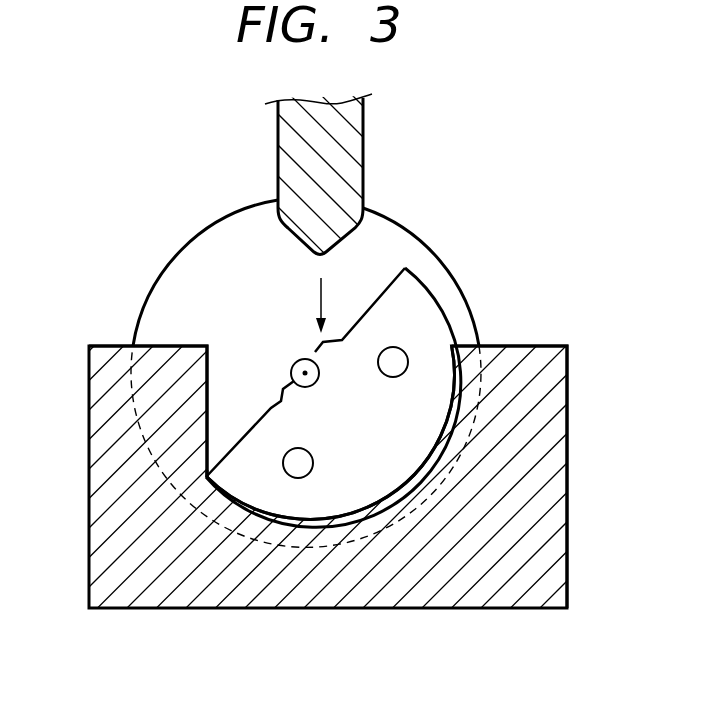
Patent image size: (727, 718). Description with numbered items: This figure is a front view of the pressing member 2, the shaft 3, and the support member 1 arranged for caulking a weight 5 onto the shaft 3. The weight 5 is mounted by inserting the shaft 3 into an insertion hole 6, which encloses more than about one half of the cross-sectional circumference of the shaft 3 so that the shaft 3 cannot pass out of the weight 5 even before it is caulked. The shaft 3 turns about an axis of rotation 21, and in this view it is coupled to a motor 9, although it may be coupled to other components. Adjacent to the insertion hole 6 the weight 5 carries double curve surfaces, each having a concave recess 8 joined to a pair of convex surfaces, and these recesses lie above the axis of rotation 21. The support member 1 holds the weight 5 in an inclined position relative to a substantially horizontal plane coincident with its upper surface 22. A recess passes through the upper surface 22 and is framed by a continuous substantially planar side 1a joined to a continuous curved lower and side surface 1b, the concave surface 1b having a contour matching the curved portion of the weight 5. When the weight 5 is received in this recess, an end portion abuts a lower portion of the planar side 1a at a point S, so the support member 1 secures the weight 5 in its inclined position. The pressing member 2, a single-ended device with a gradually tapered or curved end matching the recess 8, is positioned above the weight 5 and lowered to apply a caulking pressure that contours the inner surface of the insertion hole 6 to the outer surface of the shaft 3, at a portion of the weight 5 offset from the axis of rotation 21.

The support member 1 is at (548, 486).
The substantially planar side 1a is at (207, 402).
The curved lower and side surface 1b is at (435, 445).
The pressing member 2 is at (347, 150).
The shaft 3 is at (292, 372).
The weight 5 is at (417, 307).
The insertion hole 6 is at (308, 388).
The recess 8 is at (321, 340).
The motor 9 is at (432, 245).
The axis of rotation 21 is at (313, 372).
The upper surface 22 is at (532, 344).
The abutment point S is at (210, 475).